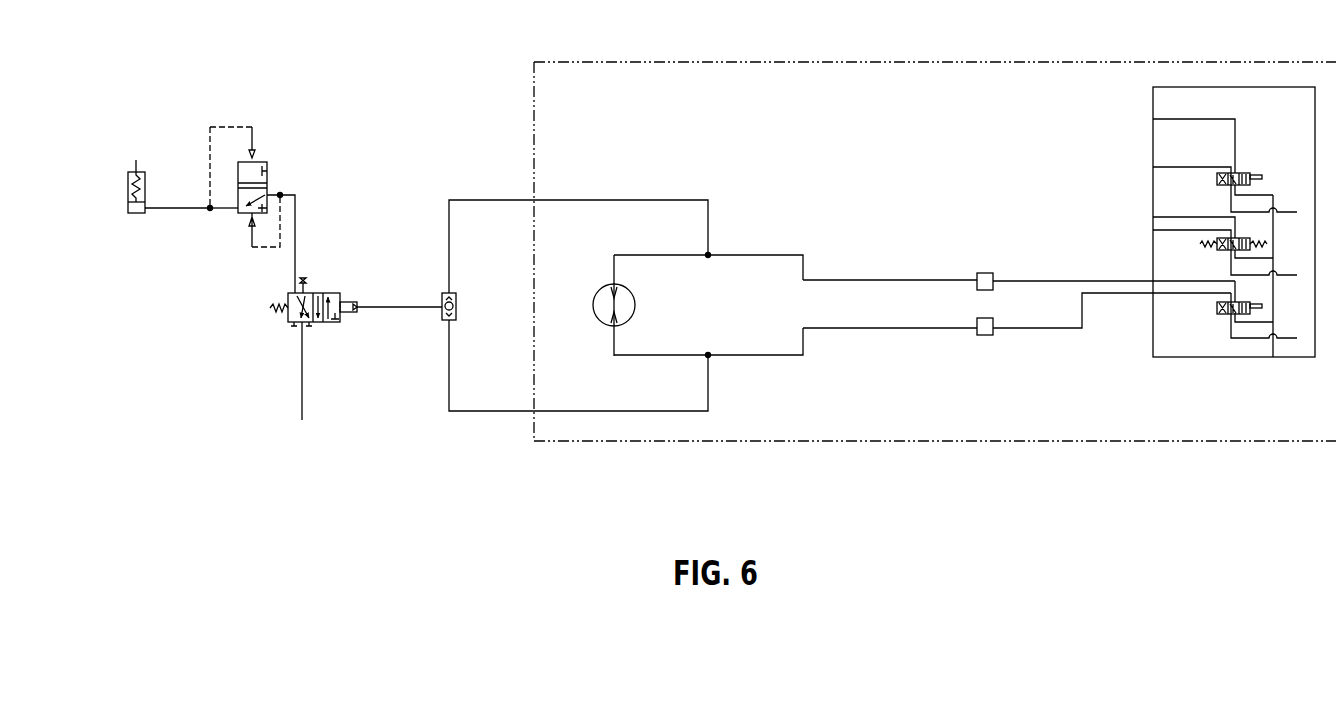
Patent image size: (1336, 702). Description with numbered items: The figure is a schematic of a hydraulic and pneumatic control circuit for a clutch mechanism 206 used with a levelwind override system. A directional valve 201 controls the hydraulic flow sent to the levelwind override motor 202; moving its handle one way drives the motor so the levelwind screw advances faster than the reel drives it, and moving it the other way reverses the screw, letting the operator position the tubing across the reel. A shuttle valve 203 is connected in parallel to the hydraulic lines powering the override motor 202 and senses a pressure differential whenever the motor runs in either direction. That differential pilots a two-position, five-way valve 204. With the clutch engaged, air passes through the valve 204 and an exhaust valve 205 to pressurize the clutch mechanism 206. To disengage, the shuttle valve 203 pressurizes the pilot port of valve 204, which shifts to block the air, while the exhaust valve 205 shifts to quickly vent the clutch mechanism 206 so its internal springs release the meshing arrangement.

The directional valve 201 is at (1241, 365).
The levelwind override motor 202 is at (598, 337).
The shuttle valve 203 is at (436, 323).
The 2-position, 5-way valve 204 is at (285, 337).
The exhaust valve 205 is at (272, 142).
The clutch mechanism 206 is at (125, 165).